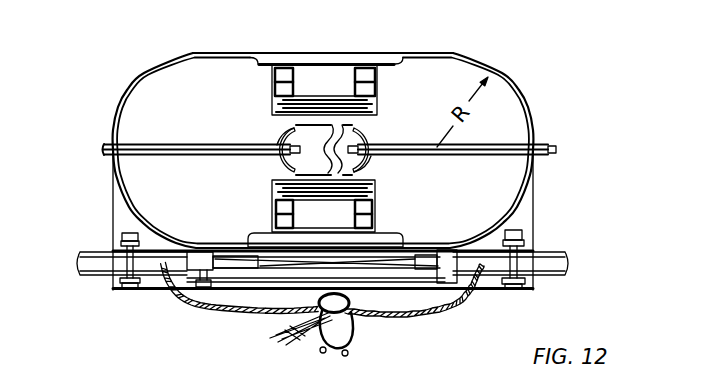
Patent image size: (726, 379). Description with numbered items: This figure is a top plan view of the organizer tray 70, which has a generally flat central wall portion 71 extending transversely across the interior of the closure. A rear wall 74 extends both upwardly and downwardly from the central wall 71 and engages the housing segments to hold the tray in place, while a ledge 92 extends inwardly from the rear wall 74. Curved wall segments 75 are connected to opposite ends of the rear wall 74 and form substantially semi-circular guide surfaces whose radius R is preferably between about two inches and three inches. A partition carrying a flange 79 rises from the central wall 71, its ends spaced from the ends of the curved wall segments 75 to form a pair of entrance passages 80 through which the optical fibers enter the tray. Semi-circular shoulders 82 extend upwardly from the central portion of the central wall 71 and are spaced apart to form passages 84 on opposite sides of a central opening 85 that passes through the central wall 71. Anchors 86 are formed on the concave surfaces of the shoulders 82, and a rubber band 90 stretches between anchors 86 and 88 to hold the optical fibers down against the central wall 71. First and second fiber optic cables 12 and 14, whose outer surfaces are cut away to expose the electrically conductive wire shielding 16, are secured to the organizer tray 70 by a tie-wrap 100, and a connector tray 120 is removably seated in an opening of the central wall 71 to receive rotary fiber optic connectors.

The first fiber optic cable 12 is at (557, 258).
The second fiber optic cable 14 is at (88, 253).
The electrically conductive wire shielding 16 is at (187, 307).
The organizer tray 70 is at (526, 97).
The central wall portion 71 is at (465, 222).
The rear wall 74 is at (277, 52).
The curved wall segment 75 is at (509, 84).
The flange 79 is at (263, 242).
The entrance passage 80 is at (414, 242).
The semi-circular shoulder 82 is at (280, 167).
The passage 84 is at (324, 150).
The central opening 85 is at (290, 140).
The anchor 86 is at (368, 175).
The anchor 88 is at (555, 150).
The rubber band 90 is at (200, 143).
The ledge 92 is at (345, 60).
The tie-wrap 100 is at (207, 228).
The connector tray 120 is at (381, 84).